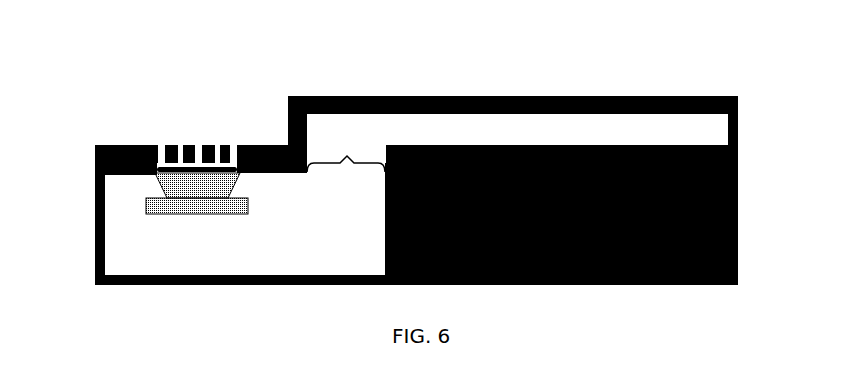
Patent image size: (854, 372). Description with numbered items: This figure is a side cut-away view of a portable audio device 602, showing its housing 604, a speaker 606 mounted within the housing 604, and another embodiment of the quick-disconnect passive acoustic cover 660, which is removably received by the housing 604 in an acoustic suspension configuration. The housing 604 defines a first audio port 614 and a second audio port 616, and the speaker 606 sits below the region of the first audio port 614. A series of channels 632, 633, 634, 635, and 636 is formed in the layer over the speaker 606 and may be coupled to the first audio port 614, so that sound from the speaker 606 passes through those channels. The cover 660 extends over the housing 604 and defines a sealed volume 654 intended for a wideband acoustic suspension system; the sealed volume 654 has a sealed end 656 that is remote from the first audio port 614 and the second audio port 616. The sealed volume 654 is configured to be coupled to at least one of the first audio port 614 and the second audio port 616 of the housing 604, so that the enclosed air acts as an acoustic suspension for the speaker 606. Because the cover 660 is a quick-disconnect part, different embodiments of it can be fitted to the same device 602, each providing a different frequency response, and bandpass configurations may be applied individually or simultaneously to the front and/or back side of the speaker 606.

The portable audio device 602 is at (814, 145).
The housing 604 is at (500, 285).
The speaker 606 is at (190, 195).
The first audio port 614 is at (198, 167).
The second audio port 616 is at (347, 156).
The channel 632 is at (163, 145).
The channel 633 is at (178, 145).
The channel 634 is at (196, 145).
The channel 635 is at (213, 145).
The channel 636 is at (231, 145).
The sealed volume 654 is at (563, 128).
The sealed end 656 is at (737, 112).
The quick-disconnect passive acoustic cover 660 is at (452, 97).